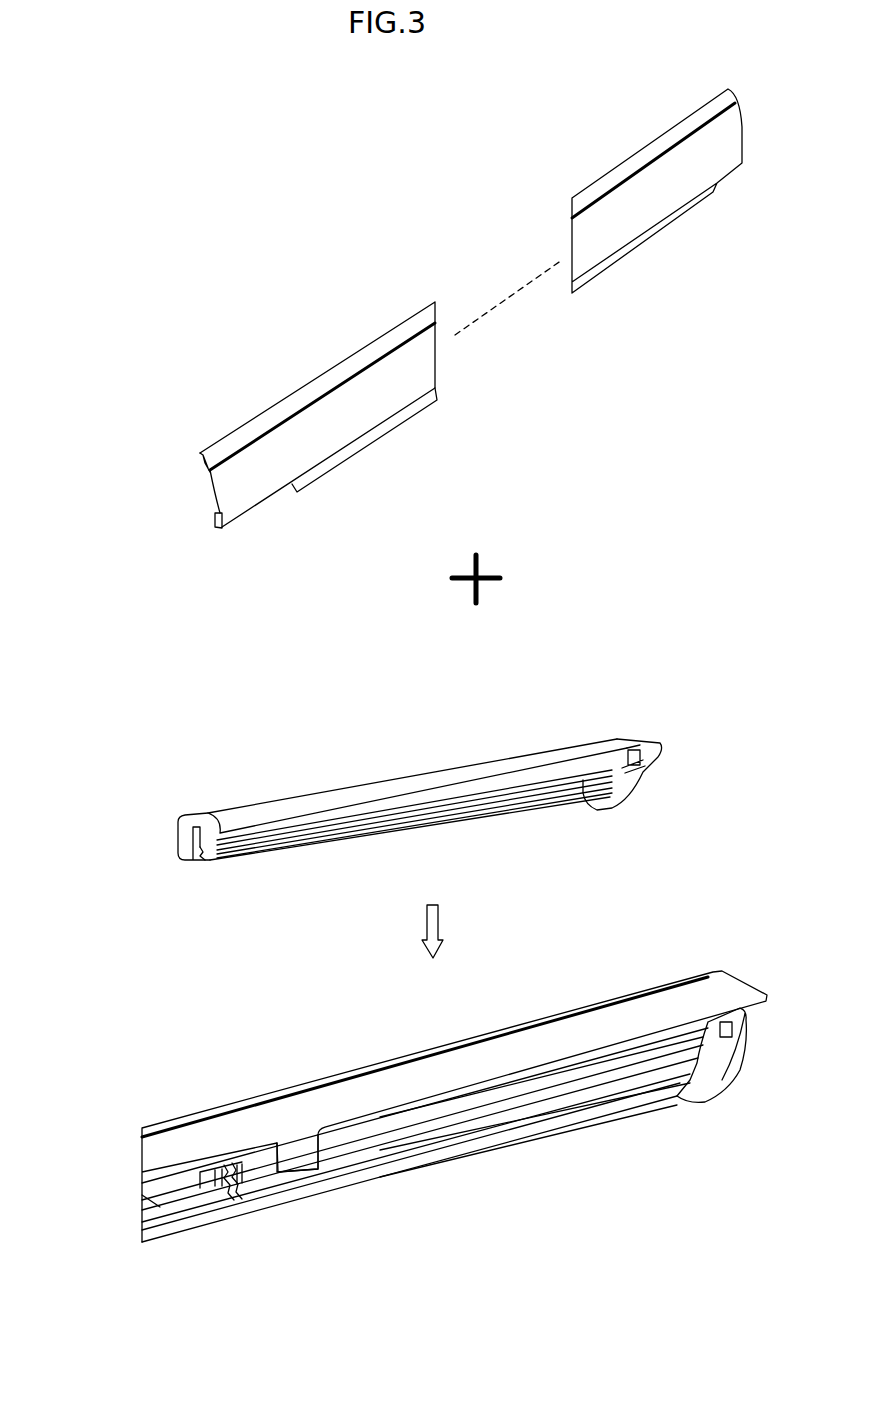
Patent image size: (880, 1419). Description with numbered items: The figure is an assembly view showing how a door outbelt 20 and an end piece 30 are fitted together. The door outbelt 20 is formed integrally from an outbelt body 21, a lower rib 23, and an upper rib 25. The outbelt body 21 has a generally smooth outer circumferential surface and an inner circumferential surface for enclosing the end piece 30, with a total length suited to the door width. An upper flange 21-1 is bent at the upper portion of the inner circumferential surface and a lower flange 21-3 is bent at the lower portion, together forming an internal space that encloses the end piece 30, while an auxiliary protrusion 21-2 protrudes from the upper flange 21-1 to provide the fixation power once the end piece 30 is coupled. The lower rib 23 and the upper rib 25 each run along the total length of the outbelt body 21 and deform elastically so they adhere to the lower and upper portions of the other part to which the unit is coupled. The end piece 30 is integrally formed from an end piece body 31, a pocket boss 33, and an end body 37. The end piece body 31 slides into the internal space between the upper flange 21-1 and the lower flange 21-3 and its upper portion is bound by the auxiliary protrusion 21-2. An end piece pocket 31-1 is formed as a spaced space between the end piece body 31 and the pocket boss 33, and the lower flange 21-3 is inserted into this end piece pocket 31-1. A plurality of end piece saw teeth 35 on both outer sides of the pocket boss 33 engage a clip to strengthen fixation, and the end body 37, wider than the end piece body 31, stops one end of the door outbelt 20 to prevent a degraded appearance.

The door outbelt 20 is at (384, 275).
The outbelt body 21 is at (255, 480).
The upper flange 21-1 is at (205, 470).
The auxiliary protrusion 21-2 is at (300, 1160).
The lower flange 21-3 is at (217, 523).
The lower rib 23 is at (323, 467).
The upper rib 25 is at (228, 443).
The end piece 30 is at (548, 708).
The end piece body 31 is at (318, 800).
The end piece pocket 31-1 is at (193, 836).
The pocket boss 33 is at (203, 857).
The end piece saw teeth 35 is at (273, 840).
The end body 37 is at (623, 780).